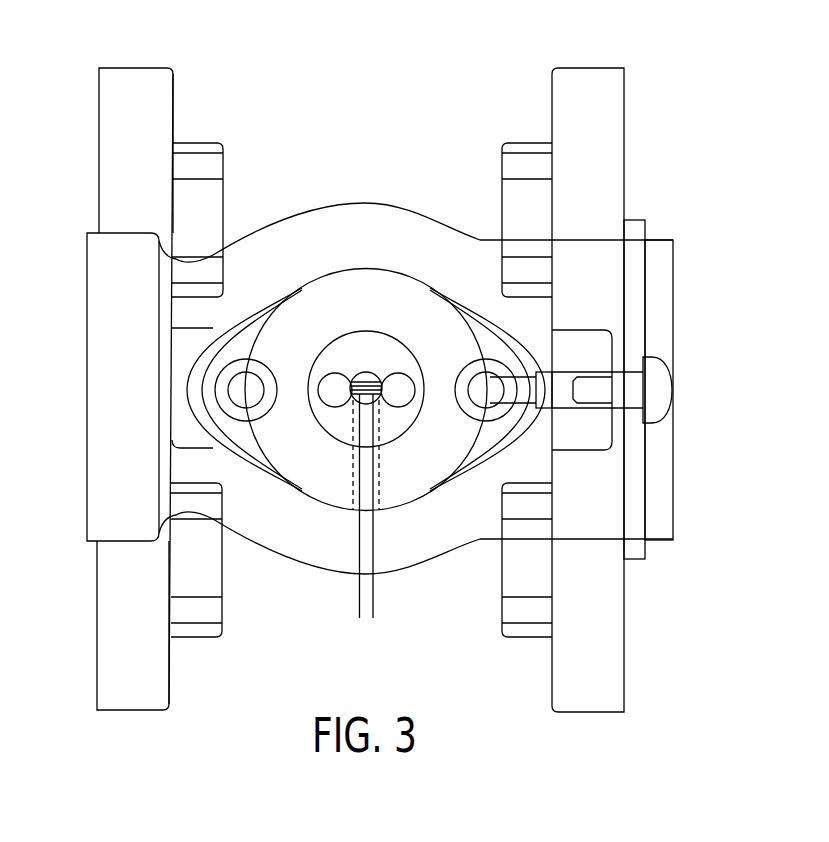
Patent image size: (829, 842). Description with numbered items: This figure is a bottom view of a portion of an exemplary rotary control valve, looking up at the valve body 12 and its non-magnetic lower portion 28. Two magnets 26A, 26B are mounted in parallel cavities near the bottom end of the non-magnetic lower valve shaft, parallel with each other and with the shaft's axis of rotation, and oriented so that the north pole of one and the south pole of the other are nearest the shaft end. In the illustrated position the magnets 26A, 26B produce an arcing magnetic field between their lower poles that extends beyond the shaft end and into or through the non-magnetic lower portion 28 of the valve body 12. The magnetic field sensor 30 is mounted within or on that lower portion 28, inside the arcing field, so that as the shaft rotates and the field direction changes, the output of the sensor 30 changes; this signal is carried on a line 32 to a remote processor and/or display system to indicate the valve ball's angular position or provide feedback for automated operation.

The valve body 12 is at (323, 221).
The non-magnetic lower portion of the valve body 28 is at (402, 291).
The magnet 26A is at (402, 382).
The magnet 26B is at (336, 381).
The magnetic field sensor 30 is at (365, 402).
The line 32 is at (362, 594).